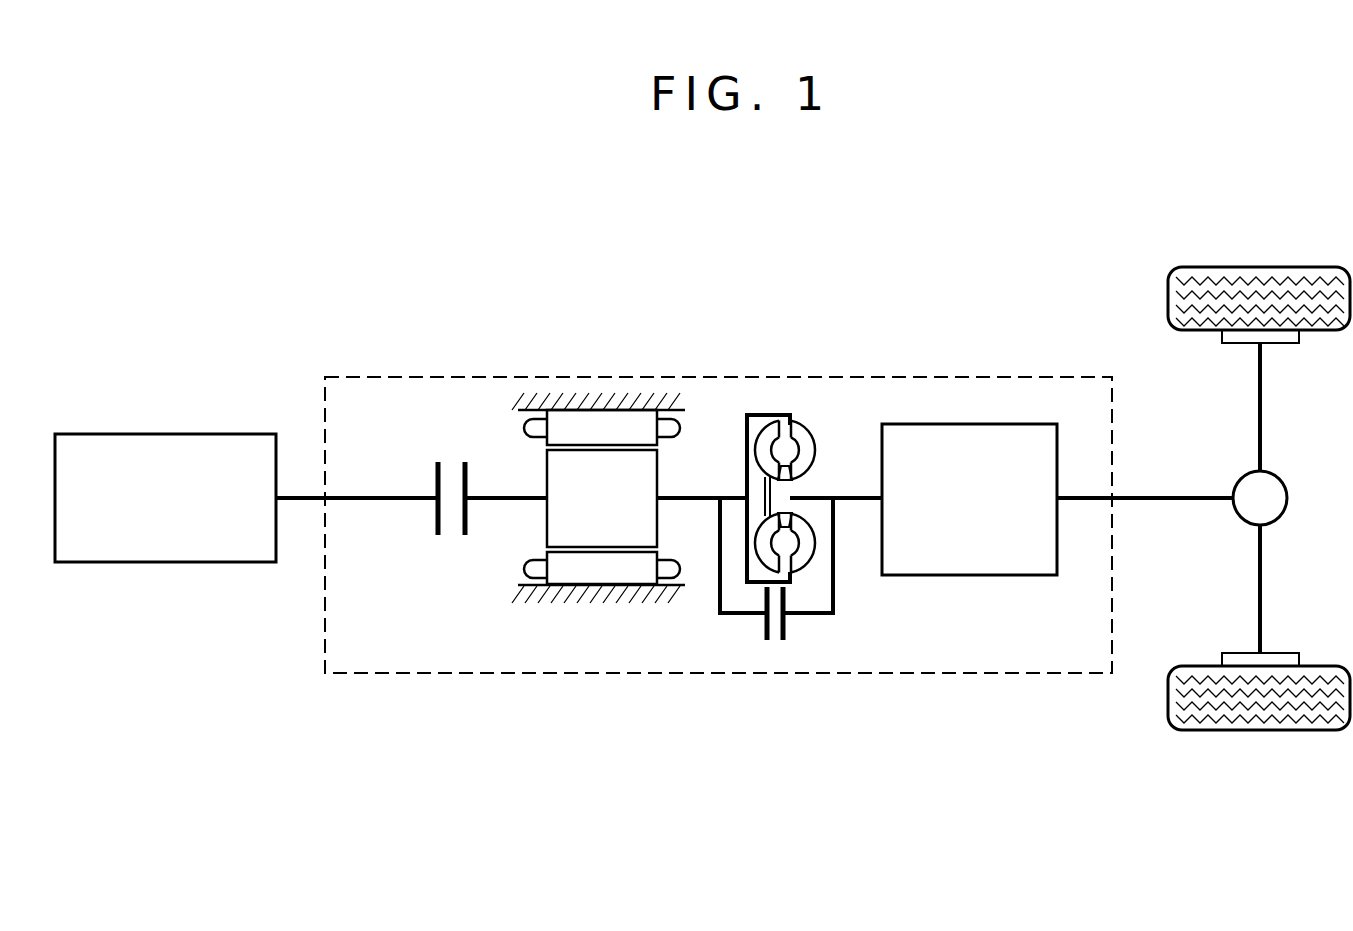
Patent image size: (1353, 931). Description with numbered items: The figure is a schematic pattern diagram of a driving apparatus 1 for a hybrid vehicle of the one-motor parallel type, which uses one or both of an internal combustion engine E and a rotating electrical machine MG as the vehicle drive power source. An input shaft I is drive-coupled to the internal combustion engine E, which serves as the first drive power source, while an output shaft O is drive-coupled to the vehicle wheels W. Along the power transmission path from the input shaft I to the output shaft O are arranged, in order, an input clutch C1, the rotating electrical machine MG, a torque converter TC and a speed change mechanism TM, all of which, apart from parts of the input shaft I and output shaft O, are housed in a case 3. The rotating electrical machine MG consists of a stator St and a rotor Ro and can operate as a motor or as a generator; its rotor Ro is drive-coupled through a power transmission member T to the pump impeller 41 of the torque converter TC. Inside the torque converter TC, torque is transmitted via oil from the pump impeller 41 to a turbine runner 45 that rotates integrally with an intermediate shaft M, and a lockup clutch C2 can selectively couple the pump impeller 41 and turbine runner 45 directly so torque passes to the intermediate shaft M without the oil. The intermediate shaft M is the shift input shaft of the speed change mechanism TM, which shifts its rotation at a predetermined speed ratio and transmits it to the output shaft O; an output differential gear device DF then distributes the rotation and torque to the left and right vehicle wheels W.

The internal combustion engine E is at (158, 433).
The driving apparatus 1 is at (407, 375).
The input shaft I is at (352, 495).
The input clutch C1 is at (437, 530).
The power transmission member T is at (520, 495).
The rotating electrical machine MG is at (560, 423).
The case 3 is at (568, 405).
The stator St is at (560, 428).
The rotor Ro is at (548, 525).
The torque converter TC is at (772, 458).
The turbine runner 45 is at (762, 452).
The pump impeller 41 is at (812, 560).
The lockup clutch C2 is at (787, 632).
The intermediate shaft M is at (843, 495).
The speed change mechanism TM is at (956, 422).
The output shaft O is at (1133, 495).
The output differential gear device DF is at (1243, 488).
The vehicle wheel W is at (1250, 275).